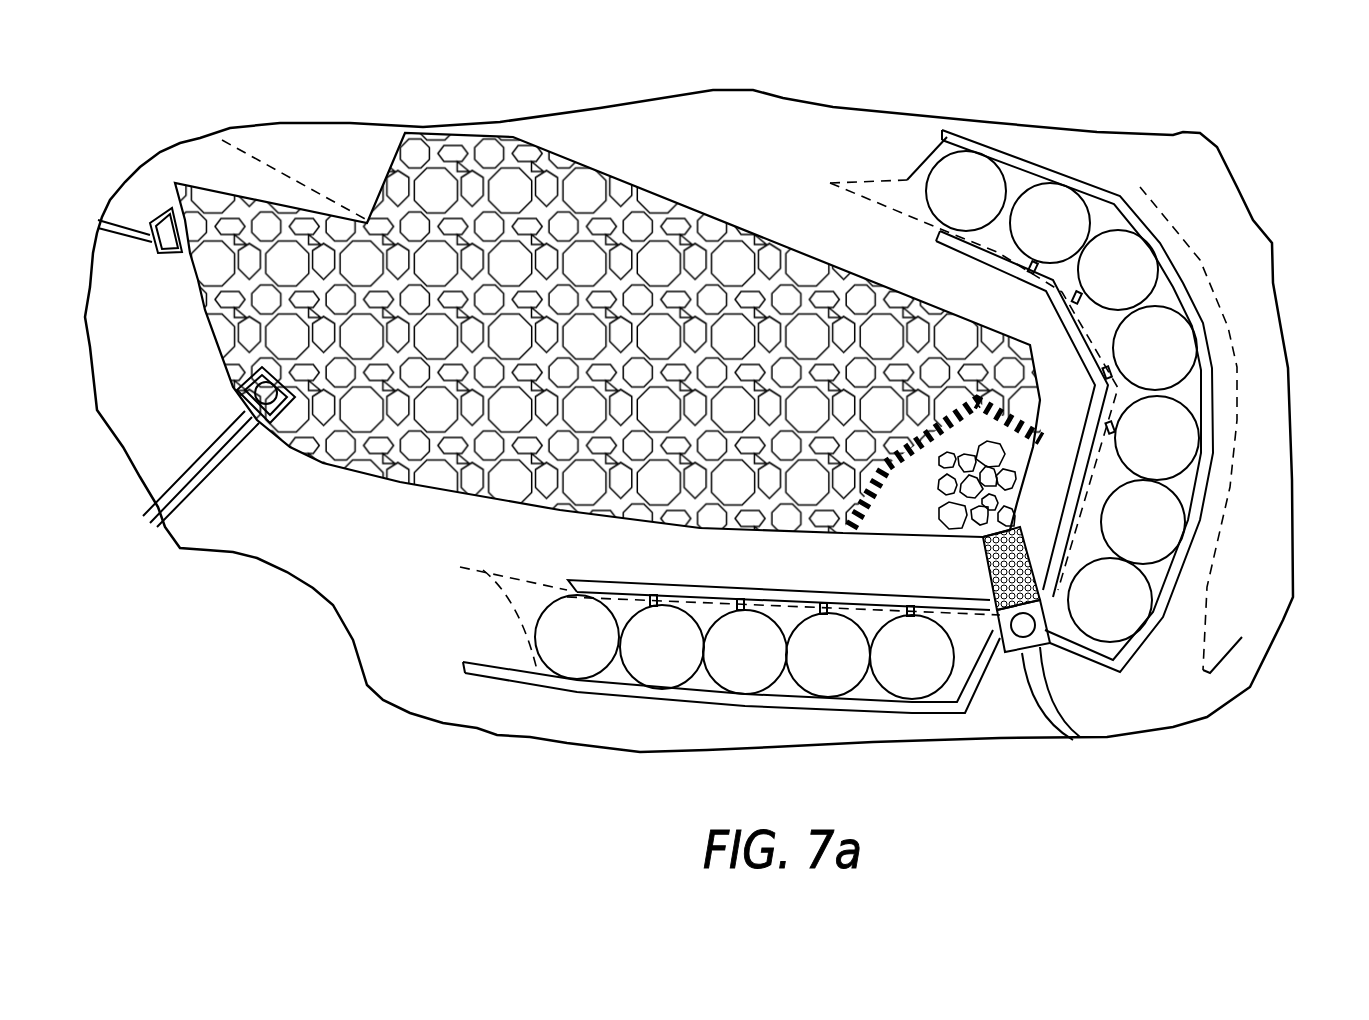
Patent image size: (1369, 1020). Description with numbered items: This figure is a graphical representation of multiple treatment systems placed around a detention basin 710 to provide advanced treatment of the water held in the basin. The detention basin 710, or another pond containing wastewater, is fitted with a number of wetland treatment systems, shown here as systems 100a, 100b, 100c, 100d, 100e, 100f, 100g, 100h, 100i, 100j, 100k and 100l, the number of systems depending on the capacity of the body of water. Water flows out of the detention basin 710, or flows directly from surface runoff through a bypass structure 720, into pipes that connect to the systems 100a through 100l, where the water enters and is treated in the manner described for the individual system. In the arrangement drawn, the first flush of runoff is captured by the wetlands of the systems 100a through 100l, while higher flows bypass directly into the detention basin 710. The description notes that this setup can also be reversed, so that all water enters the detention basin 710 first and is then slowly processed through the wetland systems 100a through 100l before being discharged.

The detention basin 710 is at (485, 152).
The bypass structure 720 is at (1008, 652).
The system 100a is at (978, 170).
The system 100b is at (1063, 200).
The system 100c is at (1140, 258).
The system 100d is at (1188, 345).
The system 100e is at (1190, 437).
The system 100f is at (1177, 520).
The system 100g is at (1127, 627).
The system 100h is at (910, 690).
The system 100i is at (827, 690).
The system 100j is at (742, 683).
The system 100k is at (657, 677).
The system 100l is at (568, 670).